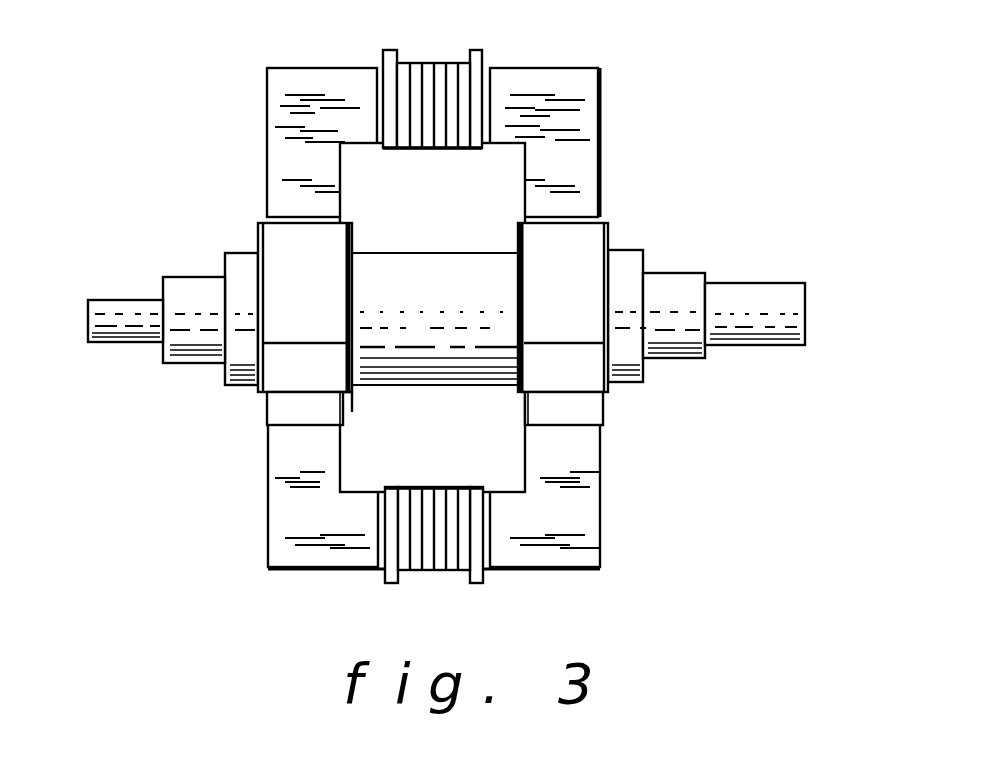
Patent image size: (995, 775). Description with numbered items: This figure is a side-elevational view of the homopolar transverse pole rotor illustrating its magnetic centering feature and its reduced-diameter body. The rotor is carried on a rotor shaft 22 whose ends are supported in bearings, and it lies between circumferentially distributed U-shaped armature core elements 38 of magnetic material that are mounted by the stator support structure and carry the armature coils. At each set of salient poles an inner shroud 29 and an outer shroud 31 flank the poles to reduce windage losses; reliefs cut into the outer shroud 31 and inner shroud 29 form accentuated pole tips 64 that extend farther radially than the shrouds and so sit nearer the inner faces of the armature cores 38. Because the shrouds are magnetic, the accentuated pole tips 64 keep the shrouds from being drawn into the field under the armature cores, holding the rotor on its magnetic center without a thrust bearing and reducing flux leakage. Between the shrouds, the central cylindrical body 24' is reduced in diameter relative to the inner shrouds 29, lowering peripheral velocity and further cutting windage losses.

The rotor shaft 22 is at (420, 311).
The central cylindrical body 24' is at (432, 317).
The inner shroud 29 is at (473, 418).
The outer shroud 31 is at (235, 415).
The armature core element 38 is at (489, 293).
The accentuated pole tips 64 is at (434, 271).